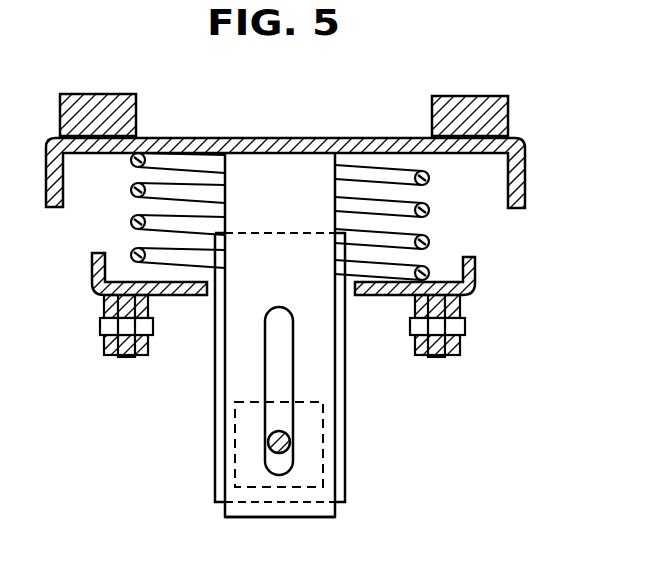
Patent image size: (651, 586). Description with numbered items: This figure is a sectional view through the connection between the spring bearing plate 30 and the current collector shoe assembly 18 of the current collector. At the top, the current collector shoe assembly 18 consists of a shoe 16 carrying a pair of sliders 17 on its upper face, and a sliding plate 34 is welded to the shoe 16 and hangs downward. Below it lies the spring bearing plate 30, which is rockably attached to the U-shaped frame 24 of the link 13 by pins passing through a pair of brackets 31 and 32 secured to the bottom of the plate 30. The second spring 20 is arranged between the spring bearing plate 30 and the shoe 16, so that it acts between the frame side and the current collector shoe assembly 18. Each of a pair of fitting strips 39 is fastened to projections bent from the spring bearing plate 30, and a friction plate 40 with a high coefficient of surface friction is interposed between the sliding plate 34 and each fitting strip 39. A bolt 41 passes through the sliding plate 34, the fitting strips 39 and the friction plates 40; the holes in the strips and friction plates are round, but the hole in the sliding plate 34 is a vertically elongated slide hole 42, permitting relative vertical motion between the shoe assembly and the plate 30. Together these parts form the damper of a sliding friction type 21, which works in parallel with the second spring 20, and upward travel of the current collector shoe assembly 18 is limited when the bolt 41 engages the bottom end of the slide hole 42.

The link 13 is at (462, 383).
The shoe 16 is at (525, 178).
The slider 17 is at (510, 112).
The current collector shoe assembly 18 is at (325, 293).
The second spring 20 is at (427, 238).
The damper of a sliding friction type 21 is at (325, 293).
The U-shaped frame 24 is at (325, 293).
The spring bearing plate 30 is at (477, 283).
The bracket 31 is at (413, 345).
The bracket 32 is at (103, 340).
The sliding plate 34 is at (277, 503).
The fitting strip 39 is at (347, 472).
The friction plate 40 is at (242, 402).
The bolt 41 is at (268, 445).
The slide hole 42 is at (288, 385).